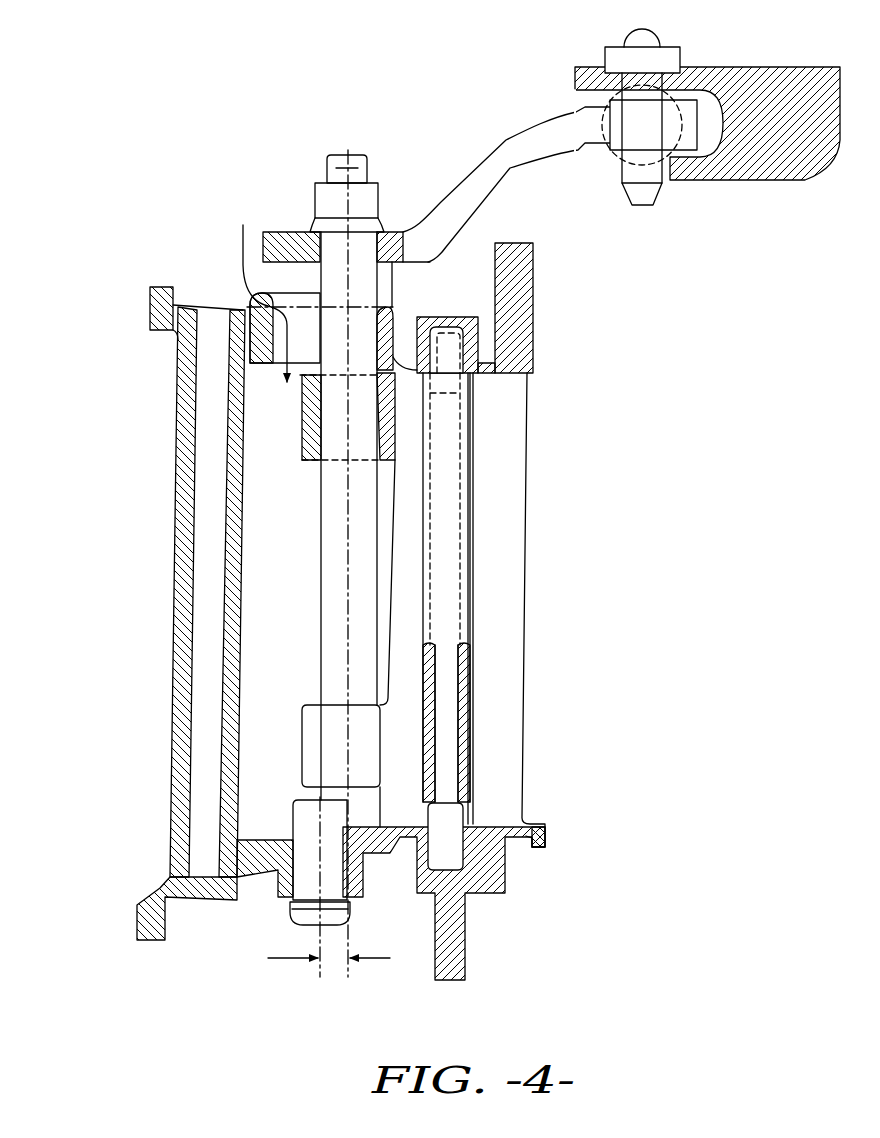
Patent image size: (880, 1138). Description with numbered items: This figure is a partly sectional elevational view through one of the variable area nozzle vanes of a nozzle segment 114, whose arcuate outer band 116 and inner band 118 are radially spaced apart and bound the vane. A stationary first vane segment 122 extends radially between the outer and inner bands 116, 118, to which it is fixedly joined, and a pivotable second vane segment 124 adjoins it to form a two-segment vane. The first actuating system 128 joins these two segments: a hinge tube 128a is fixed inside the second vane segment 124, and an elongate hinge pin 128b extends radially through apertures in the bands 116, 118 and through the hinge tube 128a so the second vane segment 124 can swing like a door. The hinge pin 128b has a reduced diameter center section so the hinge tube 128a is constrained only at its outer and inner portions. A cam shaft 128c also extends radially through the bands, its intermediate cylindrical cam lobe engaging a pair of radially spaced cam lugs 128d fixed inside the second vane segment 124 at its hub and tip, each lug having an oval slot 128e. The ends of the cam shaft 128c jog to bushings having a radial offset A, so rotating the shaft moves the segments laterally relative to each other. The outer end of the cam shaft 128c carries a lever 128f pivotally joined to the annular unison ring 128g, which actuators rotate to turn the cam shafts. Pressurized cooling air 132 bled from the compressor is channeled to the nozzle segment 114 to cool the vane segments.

The nozzle segment 114 is at (156, 248).
The outer band 116 is at (148, 310).
The inner band 118 is at (138, 922).
The first vane segment 122 is at (173, 740).
The second vane segment 124 is at (505, 430).
The first actuating system 128 is at (512, 100).
The hinge tube 128a is at (473, 752).
The hinge pin 128b is at (448, 682).
The cam shaft 128c is at (333, 650).
The cam lug 128d is at (300, 437).
The oval slot 128e is at (322, 447).
The lever 128f is at (492, 173).
The unison ring 128g is at (742, 67).
The pressurized air 132 is at (240, 238).
The radial offset A is at (268, 958).